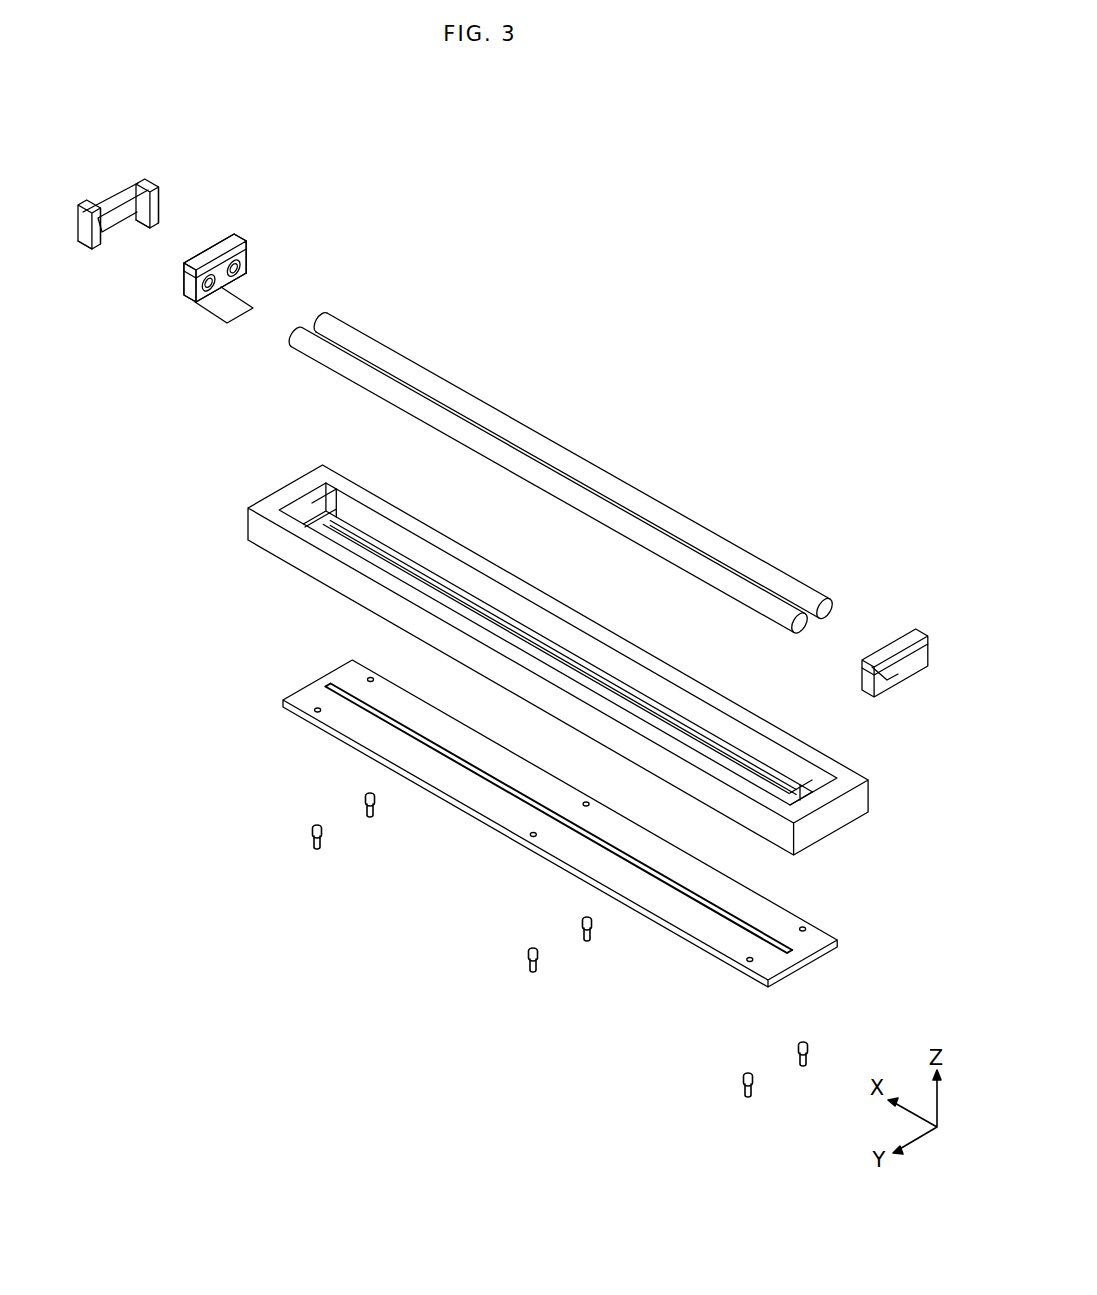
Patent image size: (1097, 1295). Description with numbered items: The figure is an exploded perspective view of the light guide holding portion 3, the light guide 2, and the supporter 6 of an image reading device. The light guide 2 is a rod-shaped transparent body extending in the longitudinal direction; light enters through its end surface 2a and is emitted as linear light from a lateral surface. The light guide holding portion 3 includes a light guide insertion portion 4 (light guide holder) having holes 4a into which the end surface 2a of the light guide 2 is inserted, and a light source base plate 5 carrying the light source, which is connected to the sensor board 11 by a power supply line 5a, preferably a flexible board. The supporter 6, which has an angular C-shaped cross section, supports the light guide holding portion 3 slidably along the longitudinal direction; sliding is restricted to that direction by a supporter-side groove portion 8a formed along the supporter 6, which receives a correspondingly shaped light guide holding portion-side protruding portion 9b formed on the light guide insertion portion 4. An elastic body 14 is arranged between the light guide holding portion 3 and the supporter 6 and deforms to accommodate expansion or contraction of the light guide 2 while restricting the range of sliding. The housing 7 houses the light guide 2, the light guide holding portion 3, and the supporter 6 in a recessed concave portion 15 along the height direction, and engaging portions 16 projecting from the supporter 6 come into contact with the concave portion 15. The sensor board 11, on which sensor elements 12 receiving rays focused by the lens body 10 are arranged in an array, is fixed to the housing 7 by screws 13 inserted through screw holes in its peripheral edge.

The light guide 2 is at (515, 462).
The end surface 2a is at (317, 317).
The light guide holding portion 3 is at (240, 237).
The light guide insertion portion 4 is at (190, 283).
The holes 4a is at (247, 273).
The light source base plate 5 is at (215, 247).
The power supply line 5a is at (220, 317).
The supporter 6 is at (112, 212).
The housing 7 is at (250, 528).
The supporter-side groove portion 8a is at (140, 217).
The light guide holding portion-side protruding portion 9b is at (247, 263).
The lens body 10 is at (583, 660).
The sensor board 11 is at (348, 663).
The sensor elements 12 is at (480, 768).
The screws 13 is at (315, 846).
The elastic body 14 is at (197, 273).
The concave portion 15 is at (300, 513).
The engaging portions 16 is at (83, 220).